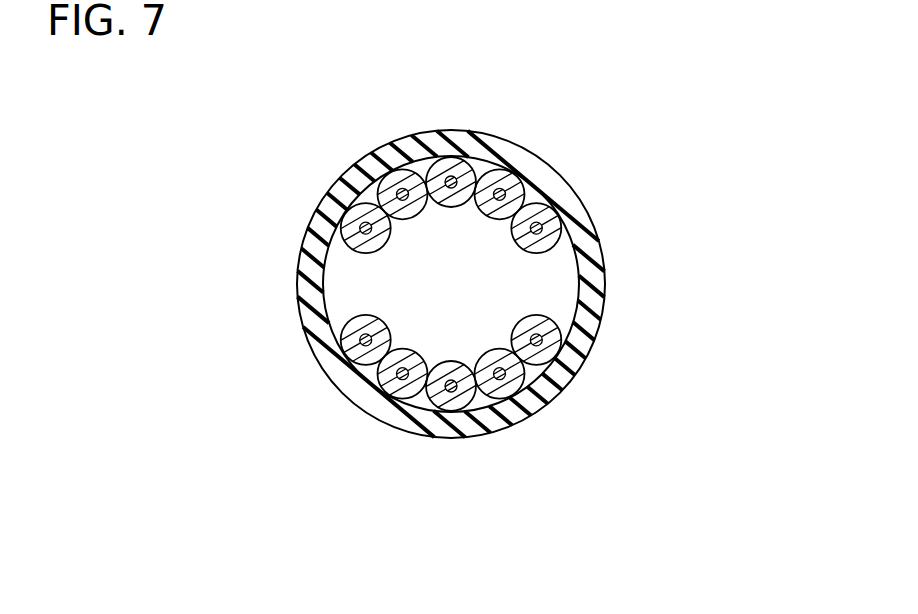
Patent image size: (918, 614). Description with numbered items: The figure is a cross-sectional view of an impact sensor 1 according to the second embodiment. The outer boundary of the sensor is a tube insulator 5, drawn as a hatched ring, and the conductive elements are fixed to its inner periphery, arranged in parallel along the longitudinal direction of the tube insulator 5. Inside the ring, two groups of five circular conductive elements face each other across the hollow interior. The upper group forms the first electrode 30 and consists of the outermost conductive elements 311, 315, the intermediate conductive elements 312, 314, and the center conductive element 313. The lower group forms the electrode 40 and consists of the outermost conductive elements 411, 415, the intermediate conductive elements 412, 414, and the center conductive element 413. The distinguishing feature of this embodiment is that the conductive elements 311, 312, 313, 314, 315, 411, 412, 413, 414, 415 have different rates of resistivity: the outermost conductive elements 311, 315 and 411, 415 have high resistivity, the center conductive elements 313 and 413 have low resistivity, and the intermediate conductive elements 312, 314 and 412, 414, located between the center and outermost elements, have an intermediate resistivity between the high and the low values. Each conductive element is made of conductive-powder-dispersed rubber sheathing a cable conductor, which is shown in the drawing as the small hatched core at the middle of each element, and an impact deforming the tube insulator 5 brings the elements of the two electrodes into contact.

The impact sensor 1 is at (677, 182).
The tube insulator 5 is at (587, 318).
The first electrode 30 is at (563, 108).
The outermost conductive element 311 is at (337, 187).
The intermediate conductive element 312 is at (382, 145).
The center conductive element 313 is at (452, 132).
The intermediate conductive element 314 is at (522, 147).
The outermost conductive element 315 is at (565, 190).
The electrode 40 is at (562, 458).
The outermost conductive element 411 is at (342, 376).
The intermediate conductive element 412 is at (390, 404).
The center conductive element 413 is at (453, 403).
The intermediate conductive element 414 is at (517, 410).
The outermost conductive element 415 is at (567, 383).